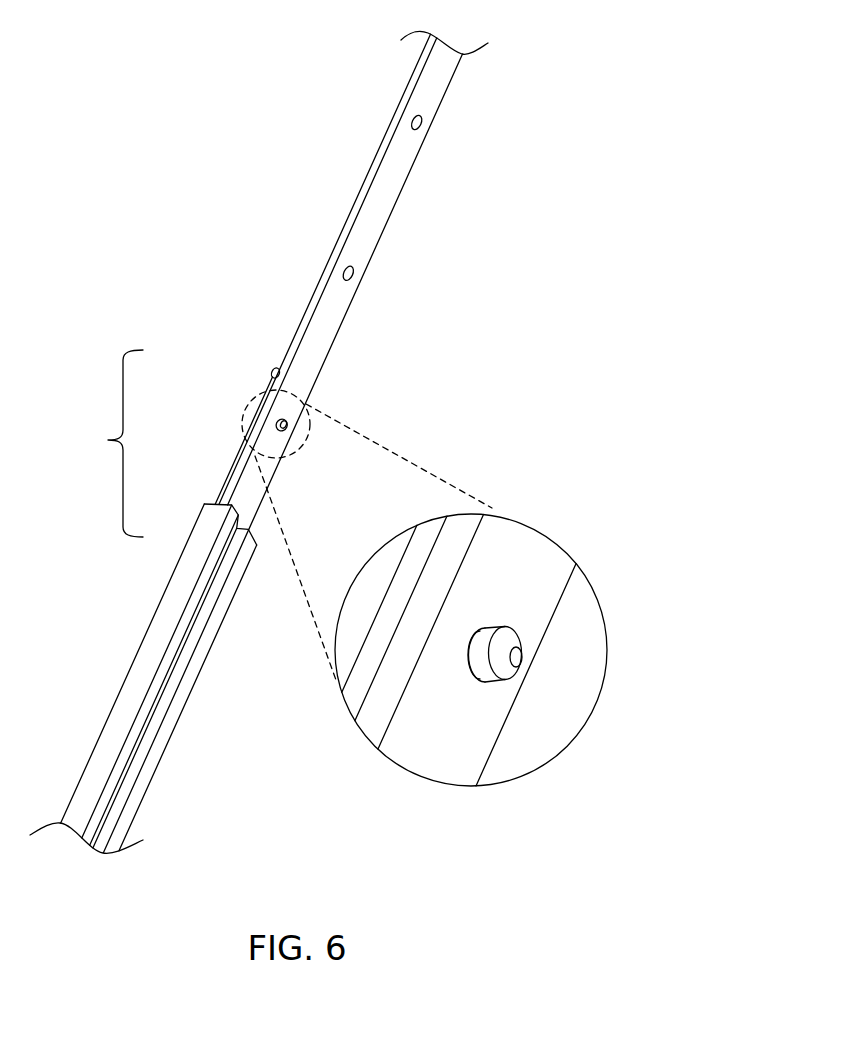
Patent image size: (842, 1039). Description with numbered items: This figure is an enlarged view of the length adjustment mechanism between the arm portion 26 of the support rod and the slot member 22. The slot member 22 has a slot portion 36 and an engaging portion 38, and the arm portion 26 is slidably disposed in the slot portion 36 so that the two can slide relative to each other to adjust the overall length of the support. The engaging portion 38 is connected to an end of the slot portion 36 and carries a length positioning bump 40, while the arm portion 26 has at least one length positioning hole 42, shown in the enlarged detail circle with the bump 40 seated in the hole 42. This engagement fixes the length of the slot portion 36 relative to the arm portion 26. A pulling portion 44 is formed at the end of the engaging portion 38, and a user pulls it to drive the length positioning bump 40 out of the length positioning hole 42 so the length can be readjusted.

The arm portion 26 is at (427, 78).
The slot member 22 is at (107, 443).
The pulling portion 44 is at (275, 376).
The engaging portion 38 is at (252, 446).
The slot portion 36 is at (208, 525).
The length positioning bump 40 is at (515, 641).
The length positioning hole 42 is at (485, 686).